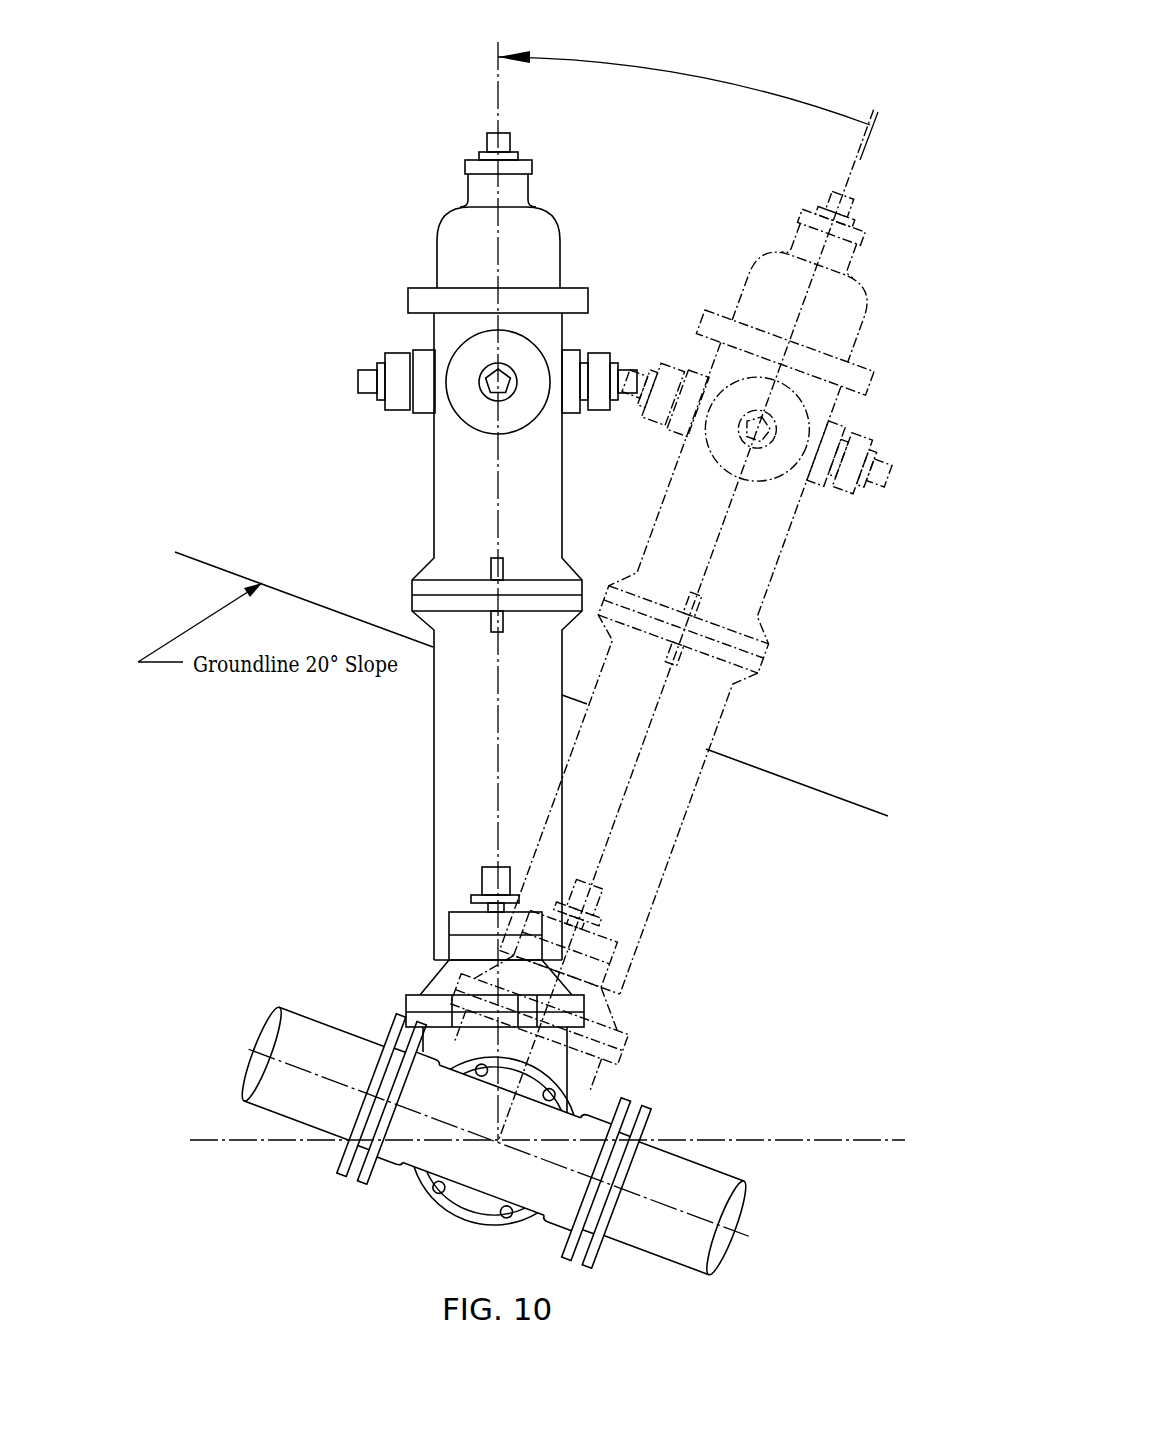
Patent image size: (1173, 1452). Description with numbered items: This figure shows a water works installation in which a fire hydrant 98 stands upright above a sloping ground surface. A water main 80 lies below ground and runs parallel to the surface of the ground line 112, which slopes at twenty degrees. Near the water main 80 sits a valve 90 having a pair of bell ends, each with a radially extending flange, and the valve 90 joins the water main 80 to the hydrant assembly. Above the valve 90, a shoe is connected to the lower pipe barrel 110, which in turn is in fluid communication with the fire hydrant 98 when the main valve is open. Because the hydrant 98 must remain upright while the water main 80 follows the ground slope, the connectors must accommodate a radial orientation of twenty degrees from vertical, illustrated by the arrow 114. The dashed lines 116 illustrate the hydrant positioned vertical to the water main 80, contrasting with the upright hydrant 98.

The water main 80 is at (348, 1045).
The valve 90 is at (437, 978).
The fire hydrant 98 is at (548, 243).
The lower pipe barrel 110 is at (447, 768).
The ground line 112 is at (838, 793).
The arrow 114 is at (700, 78).
The dashed lines 116 is at (850, 312).